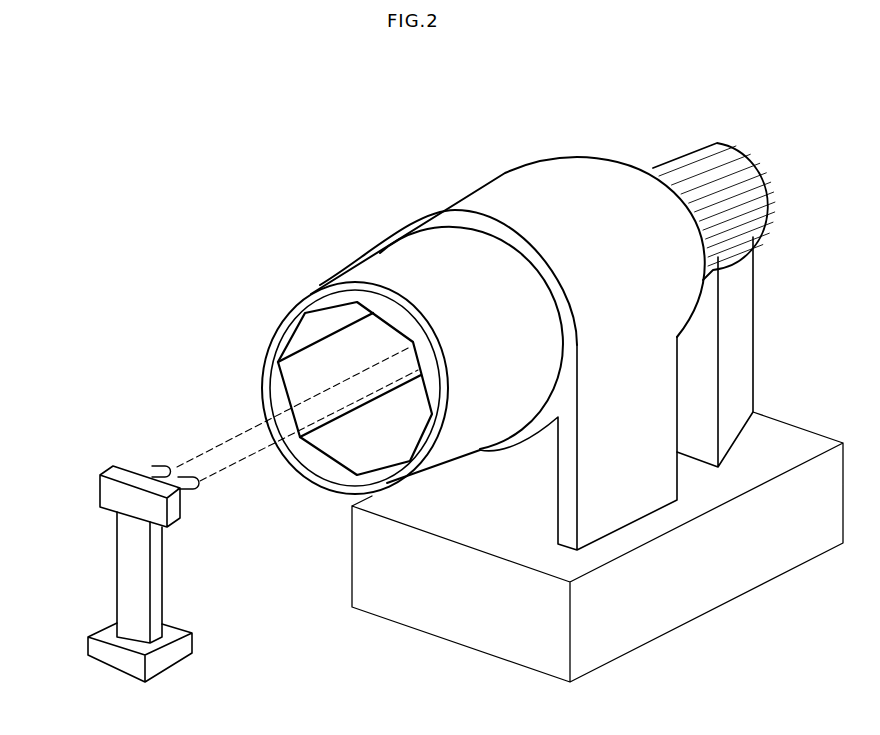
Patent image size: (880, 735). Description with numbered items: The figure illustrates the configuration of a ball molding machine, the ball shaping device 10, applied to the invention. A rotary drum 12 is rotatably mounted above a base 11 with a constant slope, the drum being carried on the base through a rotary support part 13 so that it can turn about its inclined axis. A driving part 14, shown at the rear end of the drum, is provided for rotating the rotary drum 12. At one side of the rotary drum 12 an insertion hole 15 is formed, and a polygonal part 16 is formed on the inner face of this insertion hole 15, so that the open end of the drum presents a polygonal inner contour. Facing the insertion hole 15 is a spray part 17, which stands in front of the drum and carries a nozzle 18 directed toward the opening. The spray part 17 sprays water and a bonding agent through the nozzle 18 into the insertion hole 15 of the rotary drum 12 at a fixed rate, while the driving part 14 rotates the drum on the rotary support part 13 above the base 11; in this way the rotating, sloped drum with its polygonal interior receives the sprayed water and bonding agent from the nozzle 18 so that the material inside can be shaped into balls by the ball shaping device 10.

The ball shaping device 10 is at (252, 178).
The base 11 is at (708, 592).
The rotary drum 12 is at (403, 253).
The rotary support part 13 is at (493, 188).
The driving part 14 is at (687, 157).
The insertion hole 15 is at (303, 337).
The polygonal part 16 is at (340, 443).
The spray part 17 is at (98, 490).
The nozzle 18 is at (187, 478).